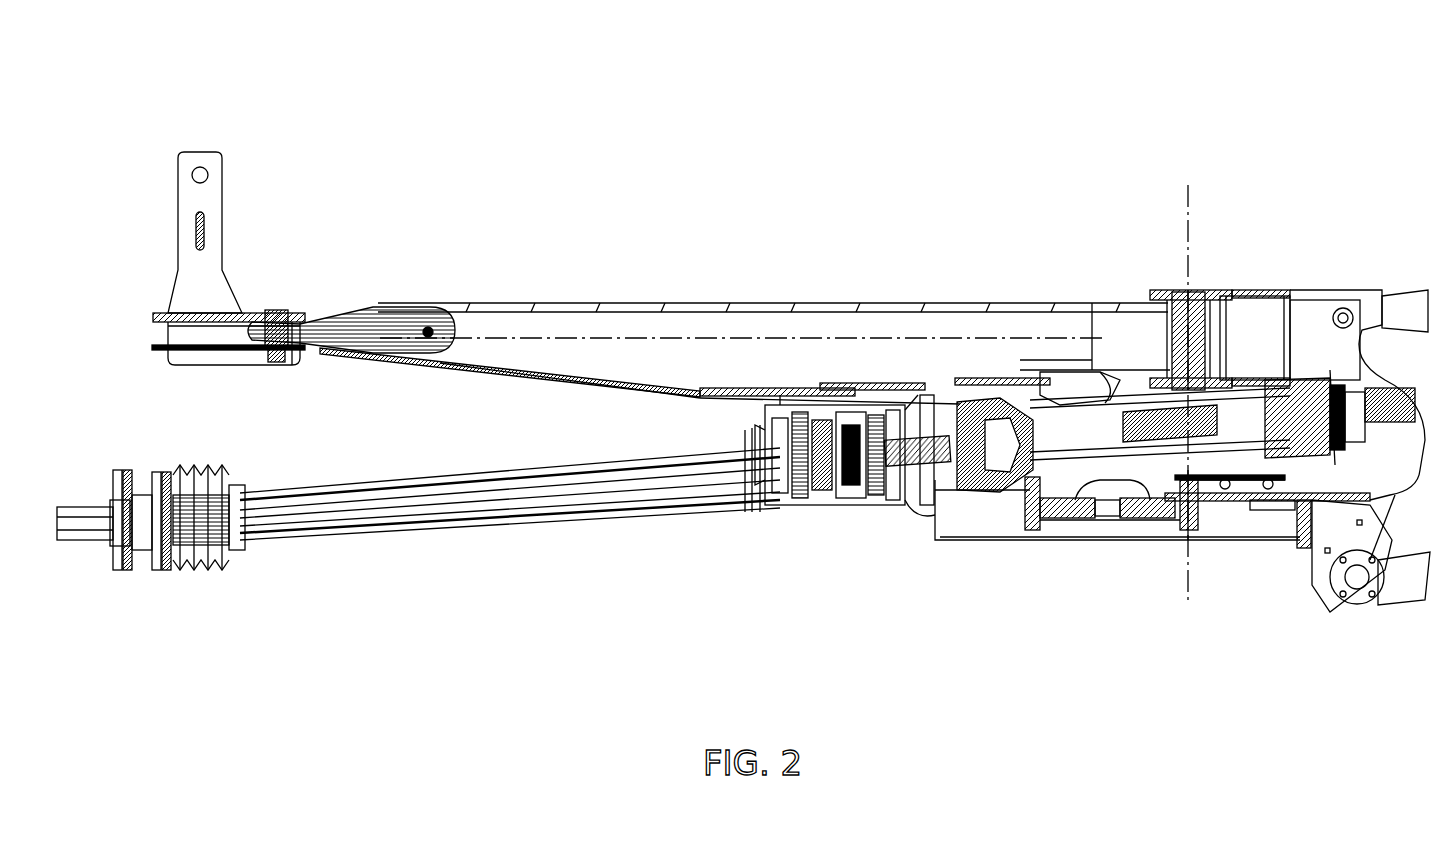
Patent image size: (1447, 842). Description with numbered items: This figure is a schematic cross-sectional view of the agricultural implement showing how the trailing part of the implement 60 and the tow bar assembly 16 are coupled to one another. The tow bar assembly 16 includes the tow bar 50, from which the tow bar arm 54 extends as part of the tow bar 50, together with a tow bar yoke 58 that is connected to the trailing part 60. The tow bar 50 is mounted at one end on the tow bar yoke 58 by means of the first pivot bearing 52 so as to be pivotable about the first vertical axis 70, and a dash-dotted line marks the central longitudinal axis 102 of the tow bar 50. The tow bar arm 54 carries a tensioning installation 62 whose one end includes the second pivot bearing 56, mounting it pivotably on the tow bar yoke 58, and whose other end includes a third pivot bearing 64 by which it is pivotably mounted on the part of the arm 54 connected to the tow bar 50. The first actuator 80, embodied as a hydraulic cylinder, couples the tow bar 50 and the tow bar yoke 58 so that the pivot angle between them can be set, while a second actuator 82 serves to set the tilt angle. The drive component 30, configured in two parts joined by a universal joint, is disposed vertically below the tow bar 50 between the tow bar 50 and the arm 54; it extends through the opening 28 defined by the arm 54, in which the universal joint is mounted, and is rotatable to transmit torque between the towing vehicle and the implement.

The tow bar assembly 16 is at (863, 100).
The opening 28 is at (877, 530).
The drive component 30 is at (668, 485).
The tow bar 50 is at (692, 310).
The first pivot bearing 52 is at (1185, 290).
The tow bar arm 54 is at (900, 530).
The second pivot bearing 56 is at (1142, 548).
The tow bar yoke 58 is at (1257, 330).
The trailing part of the implement 60 is at (1317, 288).
The tensioning installation 62 is at (1085, 530).
The third pivot bearing 64 is at (1035, 530).
The first vertical axis 70 is at (1175, 197).
The first actuator 80 is at (1083, 400).
The second actuator 82 is at (1405, 295).
The central longitudinal axis of the tow bar 102 is at (572, 325).